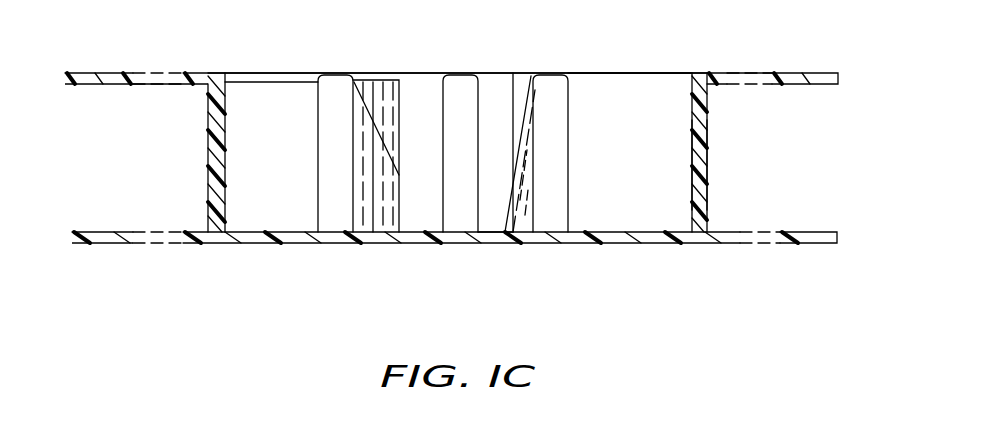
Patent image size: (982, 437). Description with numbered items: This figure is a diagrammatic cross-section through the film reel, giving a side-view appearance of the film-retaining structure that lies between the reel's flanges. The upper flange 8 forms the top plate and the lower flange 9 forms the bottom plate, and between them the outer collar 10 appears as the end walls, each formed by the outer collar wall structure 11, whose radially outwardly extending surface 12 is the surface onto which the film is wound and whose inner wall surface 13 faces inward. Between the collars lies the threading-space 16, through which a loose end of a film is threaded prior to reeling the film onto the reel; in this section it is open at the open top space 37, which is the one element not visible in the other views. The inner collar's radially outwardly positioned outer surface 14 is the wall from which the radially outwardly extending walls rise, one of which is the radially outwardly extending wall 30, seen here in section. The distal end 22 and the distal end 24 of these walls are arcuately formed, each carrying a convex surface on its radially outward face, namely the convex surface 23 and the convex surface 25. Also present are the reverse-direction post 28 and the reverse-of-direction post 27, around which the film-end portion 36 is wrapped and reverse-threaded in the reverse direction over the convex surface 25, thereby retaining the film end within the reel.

The upper flange 8 is at (800, 70).
The lower flange 9 is at (805, 232).
The outer collar 10 is at (732, 155).
The outer collar wall structure 11 is at (702, 138).
The radially outwardly extending surface 12 is at (708, 195).
The inner wall surface 13 is at (688, 192).
The inner collar radially outwardly positioned outer surface 14 is at (498, 217).
The threading-space 16 is at (240, 148).
The distal end 22 is at (335, 75).
The convex surface 23 is at (327, 108).
The distal end 24 is at (458, 75).
The convex surface 25 is at (475, 105).
The reverse-of-direction post 27 is at (548, 73).
The reverse-direction post 28 is at (518, 220).
The radially outwardly extending wall 30 is at (377, 150).
The film-end portion 36 is at (557, 138).
The open top space 37 is at (632, 73).